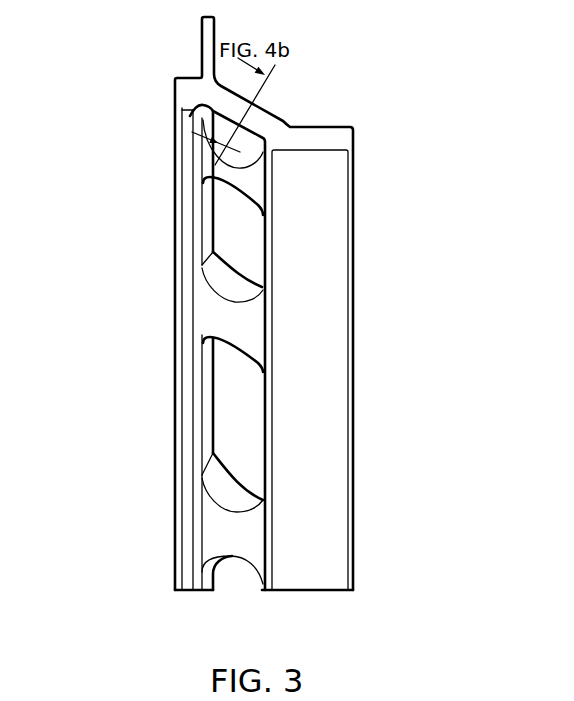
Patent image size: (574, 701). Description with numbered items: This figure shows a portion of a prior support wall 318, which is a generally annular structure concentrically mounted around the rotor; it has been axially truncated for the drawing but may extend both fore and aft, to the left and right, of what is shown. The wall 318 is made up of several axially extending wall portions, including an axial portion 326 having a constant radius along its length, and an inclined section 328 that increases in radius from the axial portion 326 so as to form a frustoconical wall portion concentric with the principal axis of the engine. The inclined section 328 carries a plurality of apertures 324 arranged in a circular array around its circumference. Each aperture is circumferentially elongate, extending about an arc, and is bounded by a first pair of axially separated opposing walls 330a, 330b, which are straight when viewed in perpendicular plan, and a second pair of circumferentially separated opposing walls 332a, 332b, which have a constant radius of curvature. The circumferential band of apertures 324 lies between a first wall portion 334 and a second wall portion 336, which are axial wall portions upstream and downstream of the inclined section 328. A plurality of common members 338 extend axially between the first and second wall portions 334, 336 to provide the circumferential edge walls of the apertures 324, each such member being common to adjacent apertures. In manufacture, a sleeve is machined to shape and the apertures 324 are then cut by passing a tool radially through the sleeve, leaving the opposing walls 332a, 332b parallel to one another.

The support wall 318 is at (130, 86).
The apertures 324 is at (237, 368).
The axial portion 326 is at (325, 188).
The inclined section 328 is at (217, 520).
The axially opposing wall 330a is at (205, 220).
The axially opposing wall 330b is at (265, 262).
The circumferentially opposing wall 332a is at (265, 335).
The circumferentially opposing wall 332b is at (263, 502).
The first axially separated wall portion 334 is at (197, 562).
The second axially separated wall portion 336 is at (287, 577).
The common members 338 is at (243, 150).